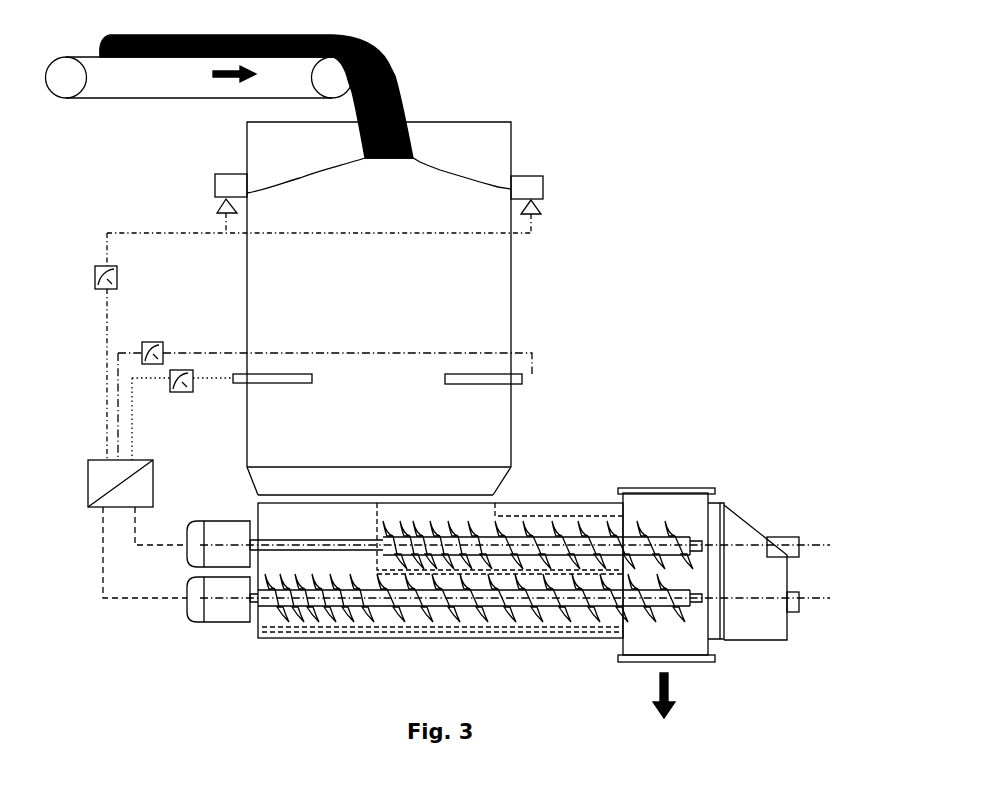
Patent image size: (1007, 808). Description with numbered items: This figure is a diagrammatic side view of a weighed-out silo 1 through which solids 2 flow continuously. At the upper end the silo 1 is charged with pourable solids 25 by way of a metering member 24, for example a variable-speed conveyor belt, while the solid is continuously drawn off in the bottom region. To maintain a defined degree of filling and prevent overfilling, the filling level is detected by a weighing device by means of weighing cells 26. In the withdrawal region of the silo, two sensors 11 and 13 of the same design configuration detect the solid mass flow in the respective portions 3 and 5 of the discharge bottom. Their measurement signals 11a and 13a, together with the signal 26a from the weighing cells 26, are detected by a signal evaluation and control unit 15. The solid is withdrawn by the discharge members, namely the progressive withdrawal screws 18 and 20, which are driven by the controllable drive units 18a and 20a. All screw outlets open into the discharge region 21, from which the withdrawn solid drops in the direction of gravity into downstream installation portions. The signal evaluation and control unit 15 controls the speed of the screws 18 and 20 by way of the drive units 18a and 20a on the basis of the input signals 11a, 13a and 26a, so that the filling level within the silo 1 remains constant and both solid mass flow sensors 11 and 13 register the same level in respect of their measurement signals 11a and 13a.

The silo 1 is at (512, 143).
The solids 2 is at (312, 173).
The portion of the withdrawal region 3 is at (480, 510).
The portion of the withdrawal region 5 is at (278, 522).
The solid mass flow sensor 11 is at (480, 381).
The measurement signal 11a is at (158, 343).
The solid mass flow sensor 13 is at (263, 382).
The measurement signal 13a is at (182, 393).
The signal evaluation and control unit 15 is at (92, 472).
The screw 18 is at (552, 525).
The controllable drive unit 18a is at (216, 528).
The screw 20 is at (347, 618).
The controllable drive unit 20a is at (198, 618).
The discharge region 21 is at (645, 488).
The metering member 24 is at (203, 98).
The solids 25 is at (333, 39).
The weighing cells 26 is at (221, 206).
The input signal 26a is at (96, 270).